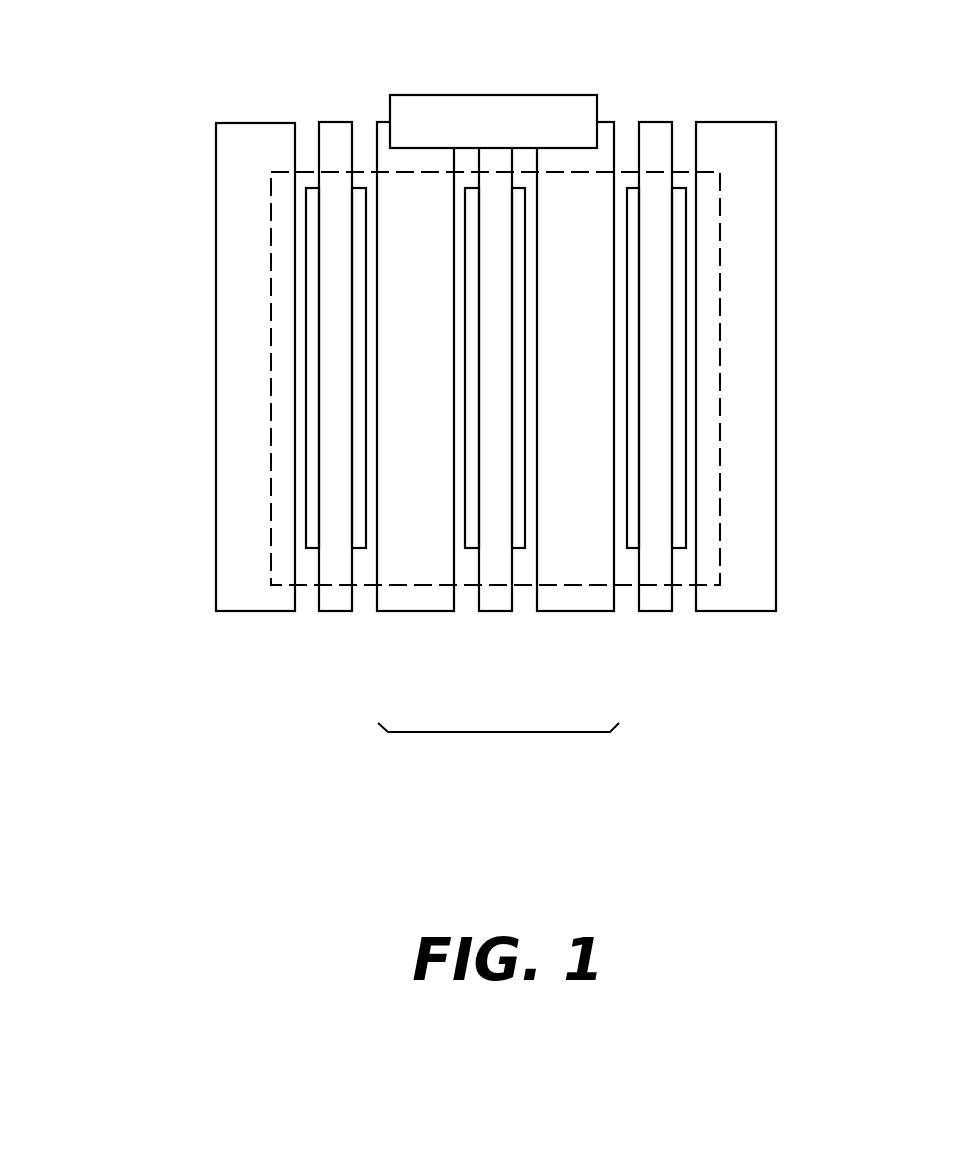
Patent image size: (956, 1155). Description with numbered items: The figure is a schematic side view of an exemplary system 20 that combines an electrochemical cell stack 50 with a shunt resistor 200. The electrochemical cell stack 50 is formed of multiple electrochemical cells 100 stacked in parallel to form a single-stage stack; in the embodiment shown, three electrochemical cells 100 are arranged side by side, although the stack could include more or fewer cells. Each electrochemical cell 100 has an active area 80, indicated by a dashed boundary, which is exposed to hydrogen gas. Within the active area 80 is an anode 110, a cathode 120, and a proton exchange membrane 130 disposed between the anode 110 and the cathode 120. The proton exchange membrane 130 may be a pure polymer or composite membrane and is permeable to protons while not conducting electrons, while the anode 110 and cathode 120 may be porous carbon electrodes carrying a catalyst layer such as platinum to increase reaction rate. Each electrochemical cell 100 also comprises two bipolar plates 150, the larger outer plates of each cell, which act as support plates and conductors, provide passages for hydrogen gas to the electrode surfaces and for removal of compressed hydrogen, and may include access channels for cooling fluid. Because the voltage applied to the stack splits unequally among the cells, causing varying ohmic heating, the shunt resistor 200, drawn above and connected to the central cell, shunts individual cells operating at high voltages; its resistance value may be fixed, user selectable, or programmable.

The system 20 is at (108, 155).
The electrochemical cell stack 50 is at (771, 110).
The active area 80 is at (720, 247).
The electrochemical cell 100 is at (495, 733).
The anode 110 is at (310, 549).
The cathode 120 is at (357, 549).
The proton exchange membrane 130 is at (333, 121).
The bipolar plate 150 is at (259, 601).
The shunt resistor 200 is at (490, 95).